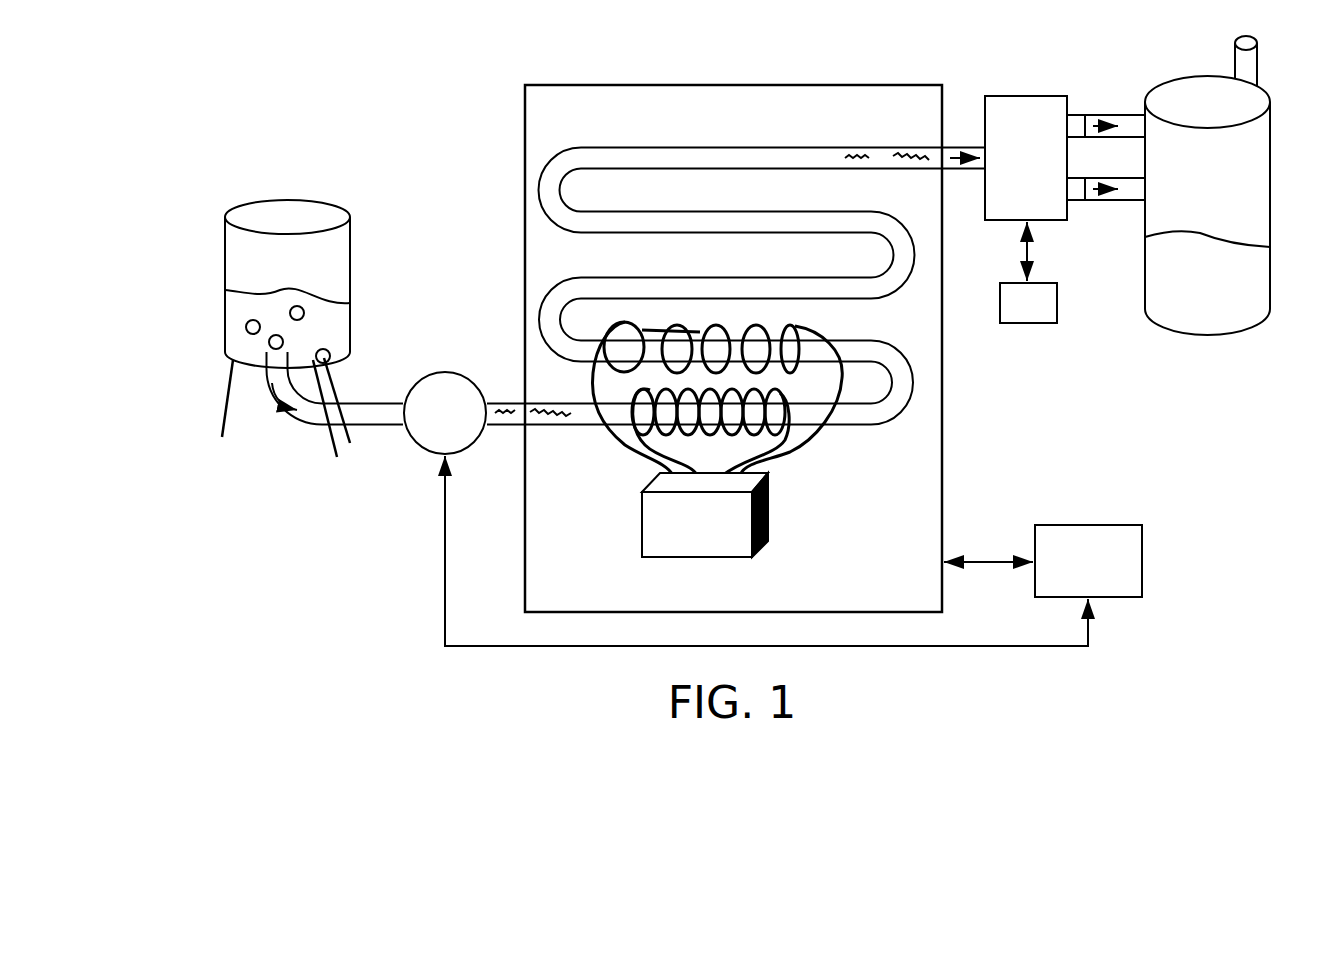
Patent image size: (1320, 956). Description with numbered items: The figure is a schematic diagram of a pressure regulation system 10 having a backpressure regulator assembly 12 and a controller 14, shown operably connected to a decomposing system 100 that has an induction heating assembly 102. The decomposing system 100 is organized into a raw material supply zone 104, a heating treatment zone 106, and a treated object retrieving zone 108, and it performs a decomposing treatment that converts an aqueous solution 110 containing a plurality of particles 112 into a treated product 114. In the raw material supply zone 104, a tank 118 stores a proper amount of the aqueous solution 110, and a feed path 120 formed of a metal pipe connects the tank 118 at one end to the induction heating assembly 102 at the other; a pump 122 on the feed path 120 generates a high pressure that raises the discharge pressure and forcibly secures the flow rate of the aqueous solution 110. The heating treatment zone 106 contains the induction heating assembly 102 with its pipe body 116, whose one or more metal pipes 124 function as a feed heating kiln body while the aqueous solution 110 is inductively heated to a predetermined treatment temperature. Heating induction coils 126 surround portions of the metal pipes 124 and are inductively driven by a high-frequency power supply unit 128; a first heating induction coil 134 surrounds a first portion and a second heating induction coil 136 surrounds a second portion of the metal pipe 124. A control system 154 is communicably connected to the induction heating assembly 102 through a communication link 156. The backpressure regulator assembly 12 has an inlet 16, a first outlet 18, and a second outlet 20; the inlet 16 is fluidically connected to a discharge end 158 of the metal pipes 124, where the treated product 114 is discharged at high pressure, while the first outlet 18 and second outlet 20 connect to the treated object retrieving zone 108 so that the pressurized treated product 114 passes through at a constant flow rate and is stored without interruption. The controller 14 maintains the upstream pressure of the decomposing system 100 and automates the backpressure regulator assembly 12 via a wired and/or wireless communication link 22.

The pressure regulation system 10 is at (1057, 240).
The backpressure regulator assembly 12 is at (1012, 95).
The controller 14 is at (1028, 325).
The inlet 16 is at (980, 171).
The first outlet 18 is at (1073, 113).
The second outlet 20 is at (1073, 205).
The communication link 22 is at (1018, 255).
The decomposing system 100 is at (351, 281).
The induction heating assembly 102 is at (748, 316).
The raw material supply zone 104 is at (351, 296).
The heating treatment zone 106 is at (736, 272).
The treated object retrieving zone 108 is at (1057, 179).
The aqueous solution 110 is at (253, 289).
The particles 112 is at (247, 325).
The treated product 114 is at (1178, 232).
The pipe body 116 is at (736, 320).
The tank 118 is at (223, 258).
The feed path 120 is at (380, 430).
The pump 122 is at (440, 373).
The metal pipes 124 is at (578, 146).
The heating induction coils 126 is at (735, 447).
The high-frequency power supply unit 128 is at (697, 558).
The first heating induction coil 134 is at (668, 453).
The second heating induction coil 136 is at (822, 326).
The control system 154 is at (1055, 525).
The communication link 156 is at (985, 560).
The discharge end 158 is at (945, 148).